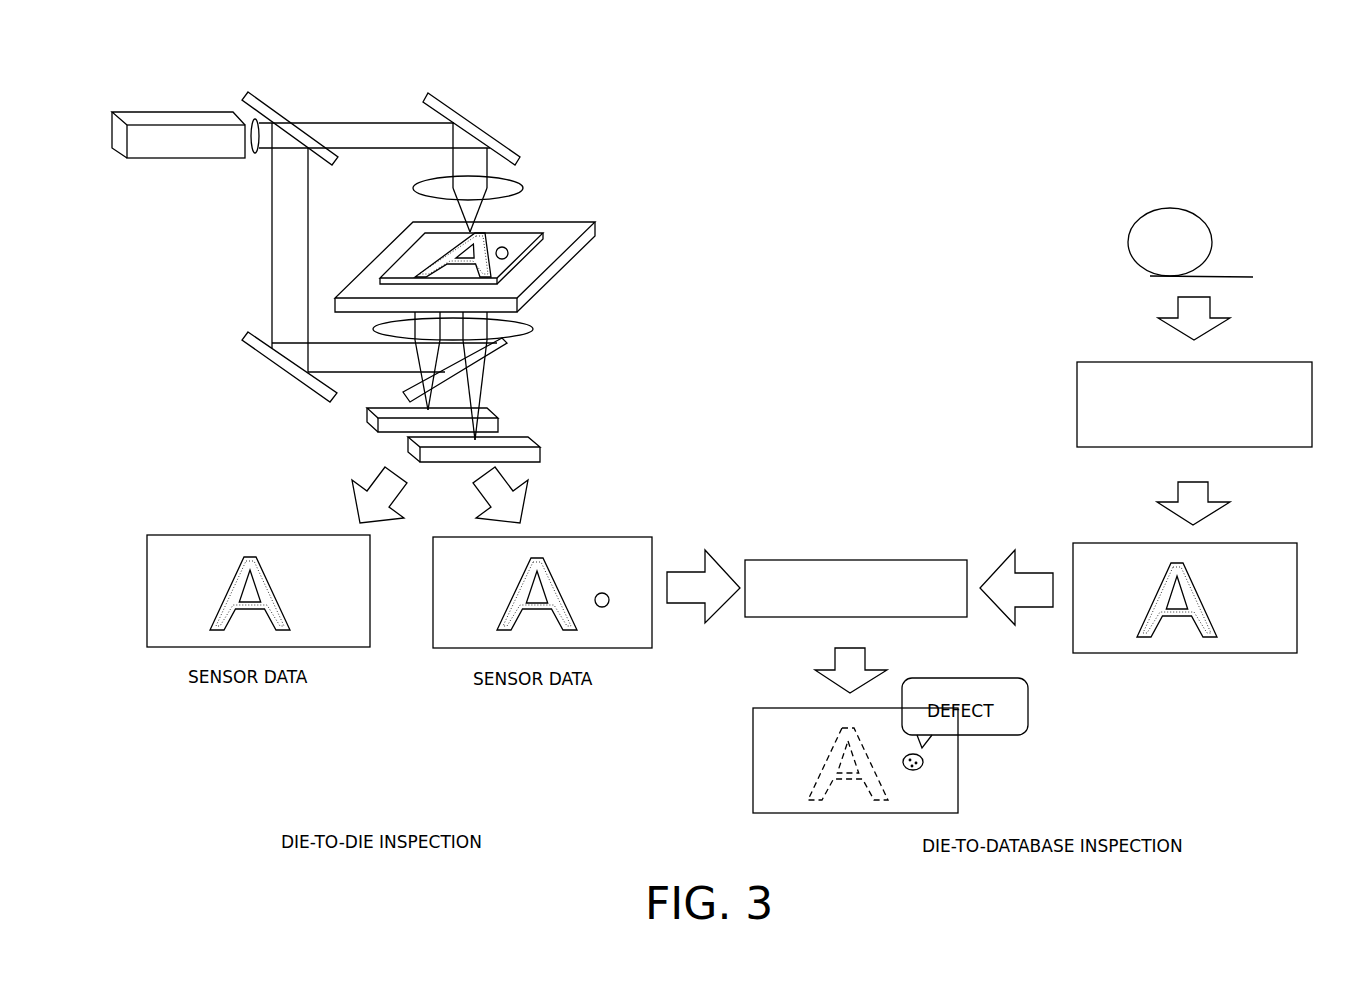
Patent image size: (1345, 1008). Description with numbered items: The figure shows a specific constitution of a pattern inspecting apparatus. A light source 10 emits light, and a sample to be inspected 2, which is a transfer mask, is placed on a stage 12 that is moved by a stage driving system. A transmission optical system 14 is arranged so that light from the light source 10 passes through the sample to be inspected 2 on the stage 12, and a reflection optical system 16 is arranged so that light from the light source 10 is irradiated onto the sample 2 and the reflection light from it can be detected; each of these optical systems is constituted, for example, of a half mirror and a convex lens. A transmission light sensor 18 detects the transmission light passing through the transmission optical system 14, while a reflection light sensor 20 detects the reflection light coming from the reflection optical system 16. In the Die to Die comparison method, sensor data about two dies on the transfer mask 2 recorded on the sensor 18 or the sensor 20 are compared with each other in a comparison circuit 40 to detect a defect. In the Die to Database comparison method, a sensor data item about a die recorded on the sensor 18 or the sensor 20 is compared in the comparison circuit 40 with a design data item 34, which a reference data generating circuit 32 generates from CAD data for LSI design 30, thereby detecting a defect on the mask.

The sample to be inspected 2 is at (520, 245).
The light source 10 is at (180, 160).
The stage 12 is at (563, 222).
The transmission optical system 14 is at (452, 102).
The reflection optical system 16 is at (253, 350).
The transmission light sensor 18 is at (533, 447).
The reflection light sensor 20 is at (493, 412).
The CAD data for LSI design 30 is at (1125, 238).
The reference data generating circuit 32 is at (1280, 362).
The design data item 34 is at (1262, 543).
The comparison circuit 40 is at (933, 560).